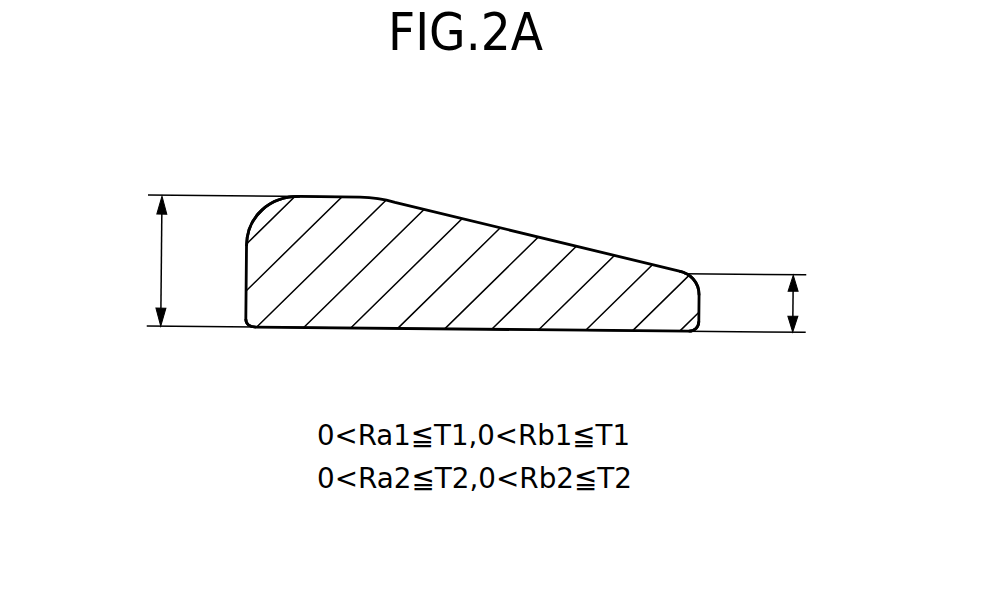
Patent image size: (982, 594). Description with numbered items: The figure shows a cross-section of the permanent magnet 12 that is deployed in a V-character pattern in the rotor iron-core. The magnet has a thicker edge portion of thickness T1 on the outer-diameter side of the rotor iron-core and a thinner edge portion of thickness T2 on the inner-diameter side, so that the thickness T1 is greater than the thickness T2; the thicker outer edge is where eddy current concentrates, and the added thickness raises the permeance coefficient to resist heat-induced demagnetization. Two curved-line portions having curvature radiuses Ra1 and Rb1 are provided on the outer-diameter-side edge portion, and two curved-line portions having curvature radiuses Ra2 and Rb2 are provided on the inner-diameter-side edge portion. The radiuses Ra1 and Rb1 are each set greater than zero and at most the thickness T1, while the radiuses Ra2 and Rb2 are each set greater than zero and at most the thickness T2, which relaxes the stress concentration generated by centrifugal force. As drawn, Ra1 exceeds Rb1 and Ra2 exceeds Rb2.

The permanent magnet 12 is at (473, 230).
The curvature radius of first outer-diameter-side curved-line portion Ra1 is at (263, 210).
The curvature radius of first inner-diameter-side curved-line portion Ra2 is at (697, 272).
The curvature radius of second outer-diameter-side curved-line portion Rb1 is at (253, 326).
The curvature radius of second inner-diameter-side curved-line portion Rb2 is at (703, 327).
The thickness of outer-diameter-side permanent-magnet edge portion T1 is at (460, 264).
The thickness of inner-diameter-side permanent-magnet edge portion T2 is at (765, 303).